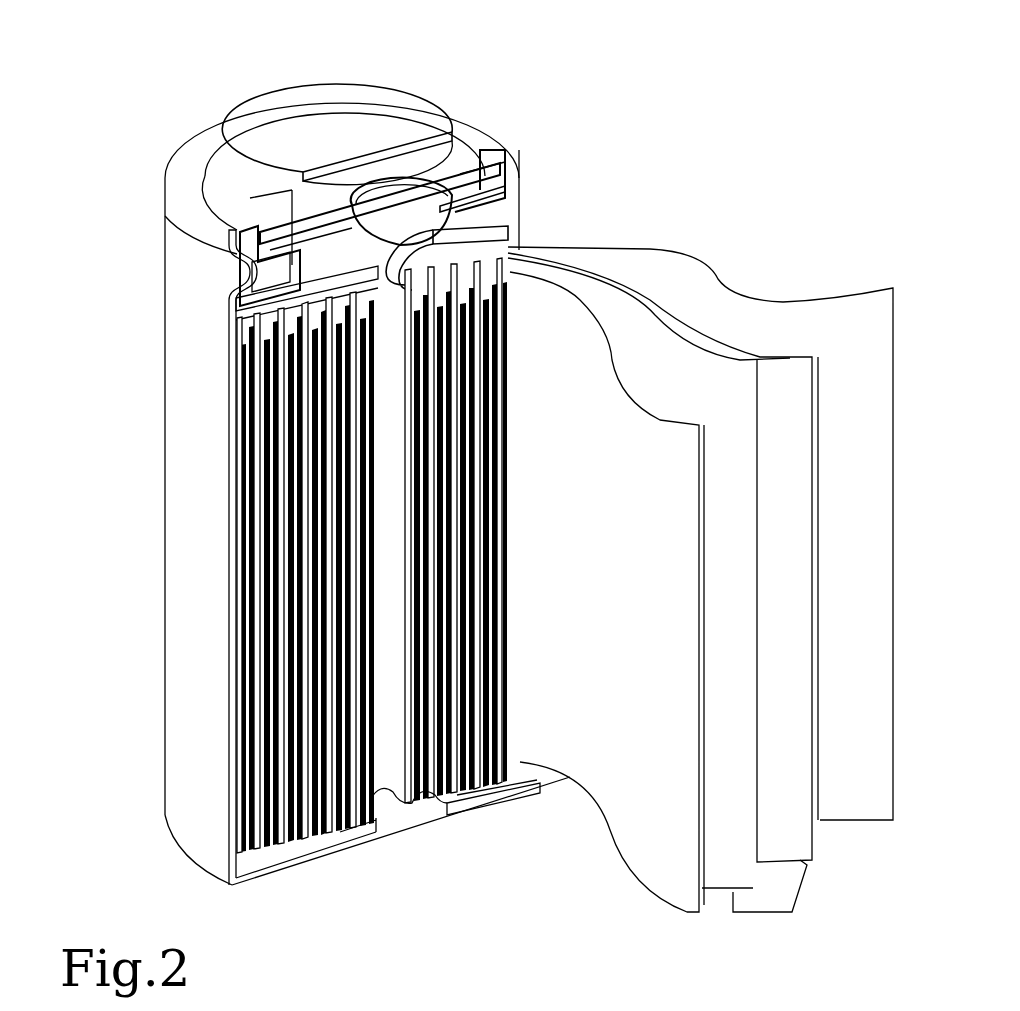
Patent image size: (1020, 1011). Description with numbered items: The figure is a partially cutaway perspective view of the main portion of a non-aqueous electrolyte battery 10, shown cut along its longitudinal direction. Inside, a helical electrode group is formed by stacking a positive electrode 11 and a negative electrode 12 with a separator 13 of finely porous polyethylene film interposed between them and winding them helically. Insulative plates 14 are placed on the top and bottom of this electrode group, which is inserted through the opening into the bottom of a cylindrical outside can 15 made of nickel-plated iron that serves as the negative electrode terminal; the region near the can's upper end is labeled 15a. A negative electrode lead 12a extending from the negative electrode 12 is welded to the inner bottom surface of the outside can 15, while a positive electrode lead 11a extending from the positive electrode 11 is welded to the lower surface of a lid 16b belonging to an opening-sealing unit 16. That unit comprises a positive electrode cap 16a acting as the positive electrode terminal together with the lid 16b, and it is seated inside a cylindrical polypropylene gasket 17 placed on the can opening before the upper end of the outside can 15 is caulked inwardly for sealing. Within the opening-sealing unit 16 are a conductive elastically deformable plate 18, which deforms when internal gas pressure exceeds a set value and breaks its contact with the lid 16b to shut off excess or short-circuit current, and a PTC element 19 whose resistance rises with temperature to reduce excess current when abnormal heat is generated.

The non-aqueous electrolyte battery 10 is at (197, 85).
The positive electrode 11 is at (263, 823).
The positive electrode lead 11a is at (242, 322).
The negative electrode 12 is at (243, 837).
The negative electrode lead 12a is at (770, 892).
The separator 13 is at (293, 820).
The insulative plate 14 is at (470, 232).
The outside can 15 is at (200, 786).
The can bead portion 15a is at (242, 290).
The opening-sealing unit 16 is at (485, 52).
The positive electrode cap 16a is at (373, 132).
The lid 16b is at (461, 190).
The gasket 17 is at (240, 244).
The conductive elastically deformable plate 18 is at (492, 195).
The PTC element 19 is at (256, 254).